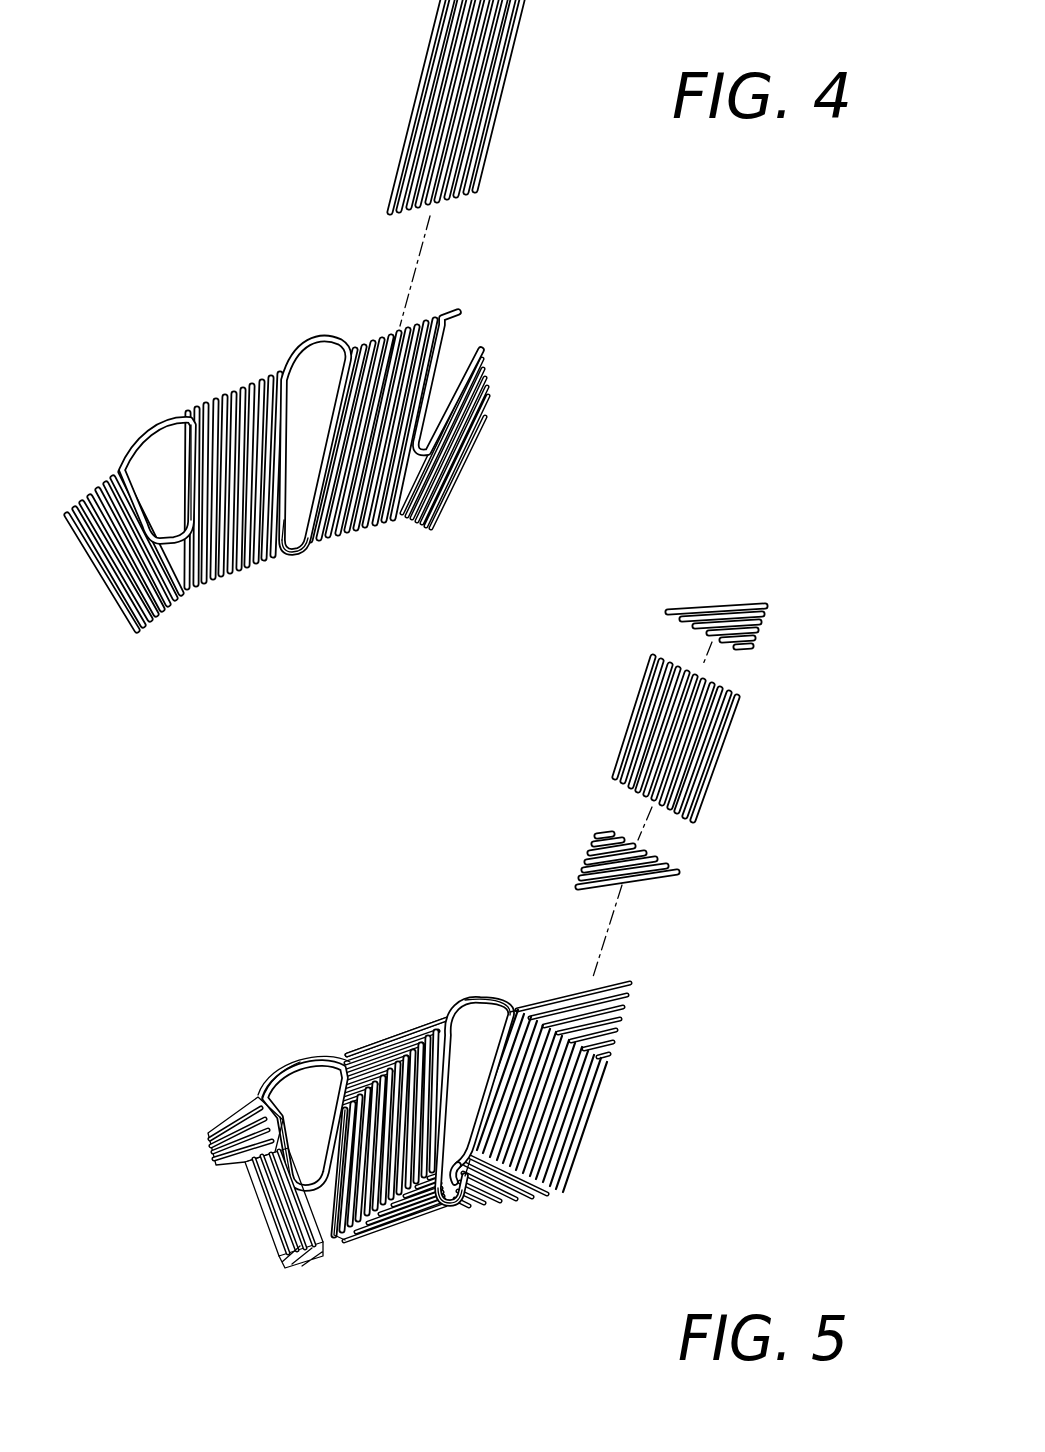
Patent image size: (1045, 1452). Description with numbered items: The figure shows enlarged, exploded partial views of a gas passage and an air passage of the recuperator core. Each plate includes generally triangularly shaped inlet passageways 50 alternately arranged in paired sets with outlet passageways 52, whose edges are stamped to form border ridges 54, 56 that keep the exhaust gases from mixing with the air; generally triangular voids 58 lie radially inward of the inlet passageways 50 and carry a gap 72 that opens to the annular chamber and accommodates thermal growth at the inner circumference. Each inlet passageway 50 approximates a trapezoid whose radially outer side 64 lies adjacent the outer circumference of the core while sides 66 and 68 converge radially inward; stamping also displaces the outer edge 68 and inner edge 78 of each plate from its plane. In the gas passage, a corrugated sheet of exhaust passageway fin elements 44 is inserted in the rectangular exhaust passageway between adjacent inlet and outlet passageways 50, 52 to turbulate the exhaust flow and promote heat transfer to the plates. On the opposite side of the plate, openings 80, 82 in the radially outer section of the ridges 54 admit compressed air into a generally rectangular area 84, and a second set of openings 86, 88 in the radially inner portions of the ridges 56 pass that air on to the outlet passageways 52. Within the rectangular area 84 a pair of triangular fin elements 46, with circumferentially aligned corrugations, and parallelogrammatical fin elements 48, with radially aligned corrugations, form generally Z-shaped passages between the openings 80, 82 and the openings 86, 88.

In FIG. 4, the exhaust passageway fin elements 44 is at (482, 58).
In FIG. 5, the triangular fin elements 46 is at (720, 608).
In FIG. 5, the parallelogrammatical fin elements 48 is at (655, 712).
In FIG. 4, the inlet passageways 50 is at (155, 460).
In FIG. 5, the inlet passageways 50 is at (303, 1133).
In FIG. 4, the outlet passageways 52 is at (290, 517).
In FIG. 5, the outlet passageways 52 is at (493, 1010).
In FIG. 4, the border ridges 54 is at (192, 415).
In FIG. 4, the border ridges 56 is at (317, 340).
In FIG. 5, the voids 58 is at (317, 1203).
In FIG. 5, the radially outer side 64 is at (277, 1095).
In FIG. 5, the side of the trapezoid 66 is at (520, 997).
In FIG. 4, the outer edge 68 is at (278, 373).
In FIG. 5, the outer edge 68 is at (445, 1035).
In FIG. 4, the gap 72 is at (187, 593).
In FIG. 5, the gap 72 is at (330, 1247).
In FIG. 4, the inner edge 78 is at (288, 560).
In FIG. 5, the inner edge 78 is at (442, 1208).
In FIG. 5, the opening 80 is at (310, 1075).
In FIG. 5, the opening 82 is at (267, 1098).
In FIG. 5, the rectangular area 84 is at (360, 1053).
In FIG. 5, the opening 86 is at (460, 1183).
In FIG. 5, the opening 88 is at (438, 1207).